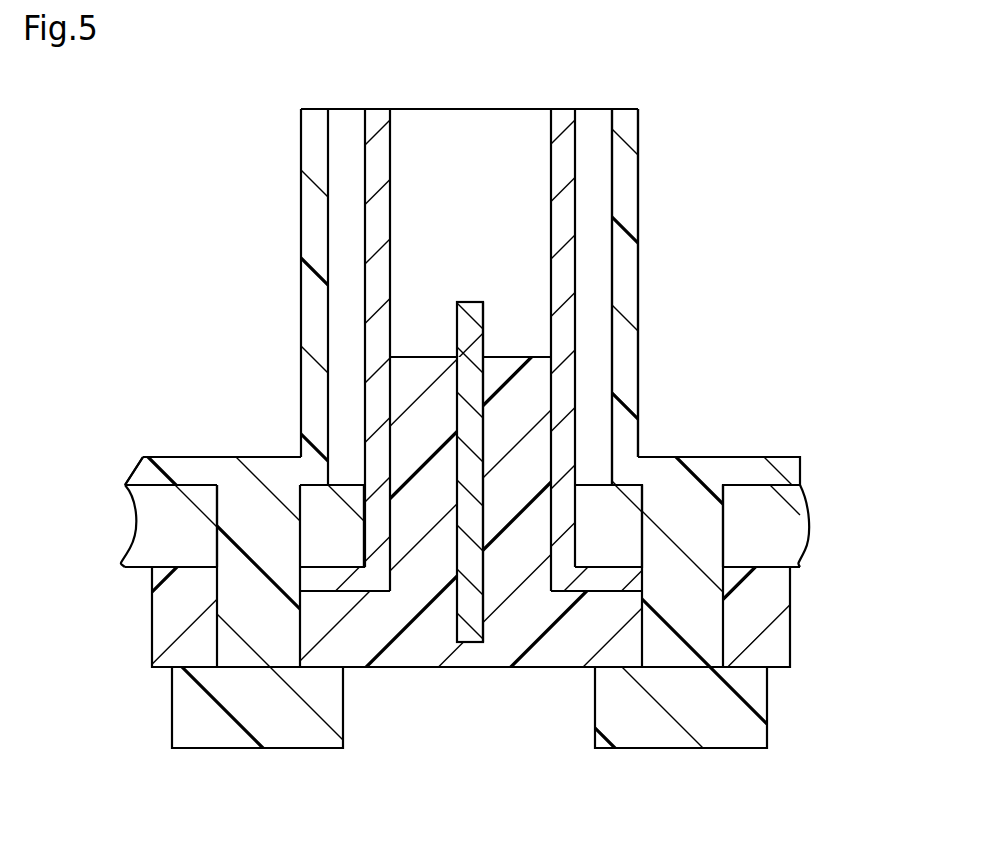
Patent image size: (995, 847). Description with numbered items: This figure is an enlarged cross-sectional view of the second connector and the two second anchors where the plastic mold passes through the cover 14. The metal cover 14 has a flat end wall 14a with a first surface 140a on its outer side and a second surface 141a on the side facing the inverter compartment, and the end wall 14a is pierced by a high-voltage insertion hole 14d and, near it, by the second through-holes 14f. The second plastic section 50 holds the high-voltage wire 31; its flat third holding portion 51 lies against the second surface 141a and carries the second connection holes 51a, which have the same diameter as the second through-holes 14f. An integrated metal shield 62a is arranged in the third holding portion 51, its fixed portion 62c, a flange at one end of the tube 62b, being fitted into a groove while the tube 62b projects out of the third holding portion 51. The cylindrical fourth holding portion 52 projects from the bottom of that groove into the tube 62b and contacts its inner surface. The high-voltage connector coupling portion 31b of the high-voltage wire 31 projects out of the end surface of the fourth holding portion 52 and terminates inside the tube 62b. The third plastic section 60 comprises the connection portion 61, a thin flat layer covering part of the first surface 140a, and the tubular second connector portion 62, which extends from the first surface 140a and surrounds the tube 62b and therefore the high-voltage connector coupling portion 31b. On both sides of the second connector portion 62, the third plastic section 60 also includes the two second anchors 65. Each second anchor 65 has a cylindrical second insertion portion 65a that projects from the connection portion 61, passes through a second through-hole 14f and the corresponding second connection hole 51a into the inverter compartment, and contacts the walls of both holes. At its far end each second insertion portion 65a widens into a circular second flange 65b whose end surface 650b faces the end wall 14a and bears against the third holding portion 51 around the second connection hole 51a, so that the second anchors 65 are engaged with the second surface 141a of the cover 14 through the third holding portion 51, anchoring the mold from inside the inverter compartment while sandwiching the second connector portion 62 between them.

The cover 14 is at (137, 497).
The end wall 14a is at (765, 492).
The high-voltage insertion hole 14d is at (366, 533).
The second through-holes 14f is at (222, 506).
The first surface 140a is at (137, 468).
The second surface 141a is at (141, 573).
The high-voltage wire 31 is at (474, 644).
The high-voltage connector coupling portion 31b is at (476, 384).
The second plastic section 50 is at (149, 605).
The third holding portion 51 is at (403, 395).
The second connection holes 51a is at (297, 655).
The fourth holding portion 52 is at (414, 370).
The third plastic section 60 is at (195, 454).
The connection portion 61 is at (171, 466).
The second connector portion 62 is at (629, 174).
The shield 62a is at (560, 122).
The tube 62b is at (562, 264).
The fixed portion 62c is at (607, 577).
The second anchors 65 is at (173, 685).
The second insertion portion 65a is at (233, 652).
The second flange 65b is at (187, 732).
The end surface 650b is at (743, 662).